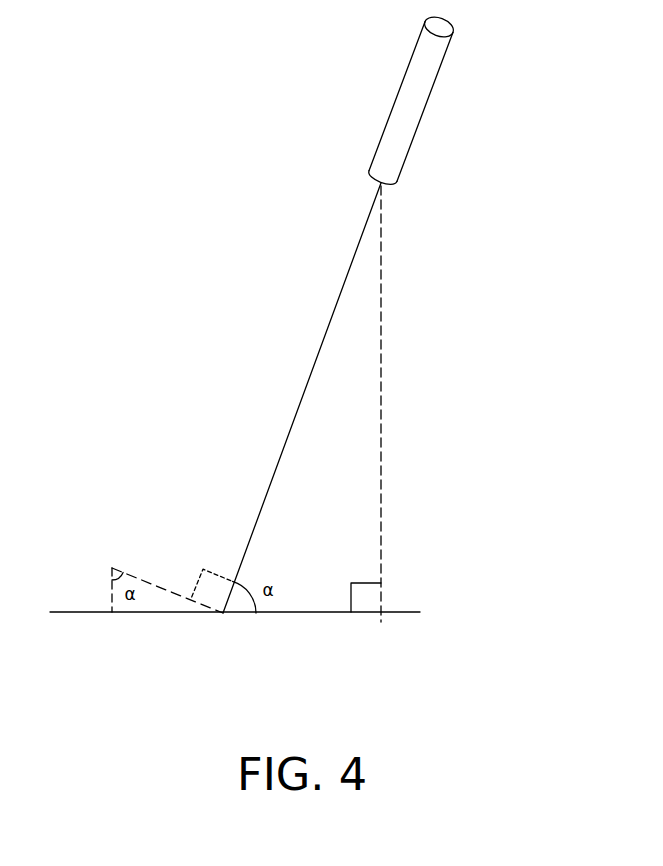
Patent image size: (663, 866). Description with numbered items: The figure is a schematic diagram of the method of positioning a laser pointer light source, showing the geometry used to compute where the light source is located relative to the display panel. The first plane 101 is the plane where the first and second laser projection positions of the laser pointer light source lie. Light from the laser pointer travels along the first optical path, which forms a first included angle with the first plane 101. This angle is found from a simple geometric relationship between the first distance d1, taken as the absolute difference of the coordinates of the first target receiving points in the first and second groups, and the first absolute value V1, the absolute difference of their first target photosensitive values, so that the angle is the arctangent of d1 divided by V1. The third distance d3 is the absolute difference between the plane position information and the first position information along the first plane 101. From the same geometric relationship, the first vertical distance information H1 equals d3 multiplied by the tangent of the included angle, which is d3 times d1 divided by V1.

The first plane 101 is at (418, 612).
The first vertical distance information H1 is at (402, 183).
The first distance d1 is at (225, 622).
The third distance d3 is at (225, 615).
The first absolute value V1 is at (105, 567).